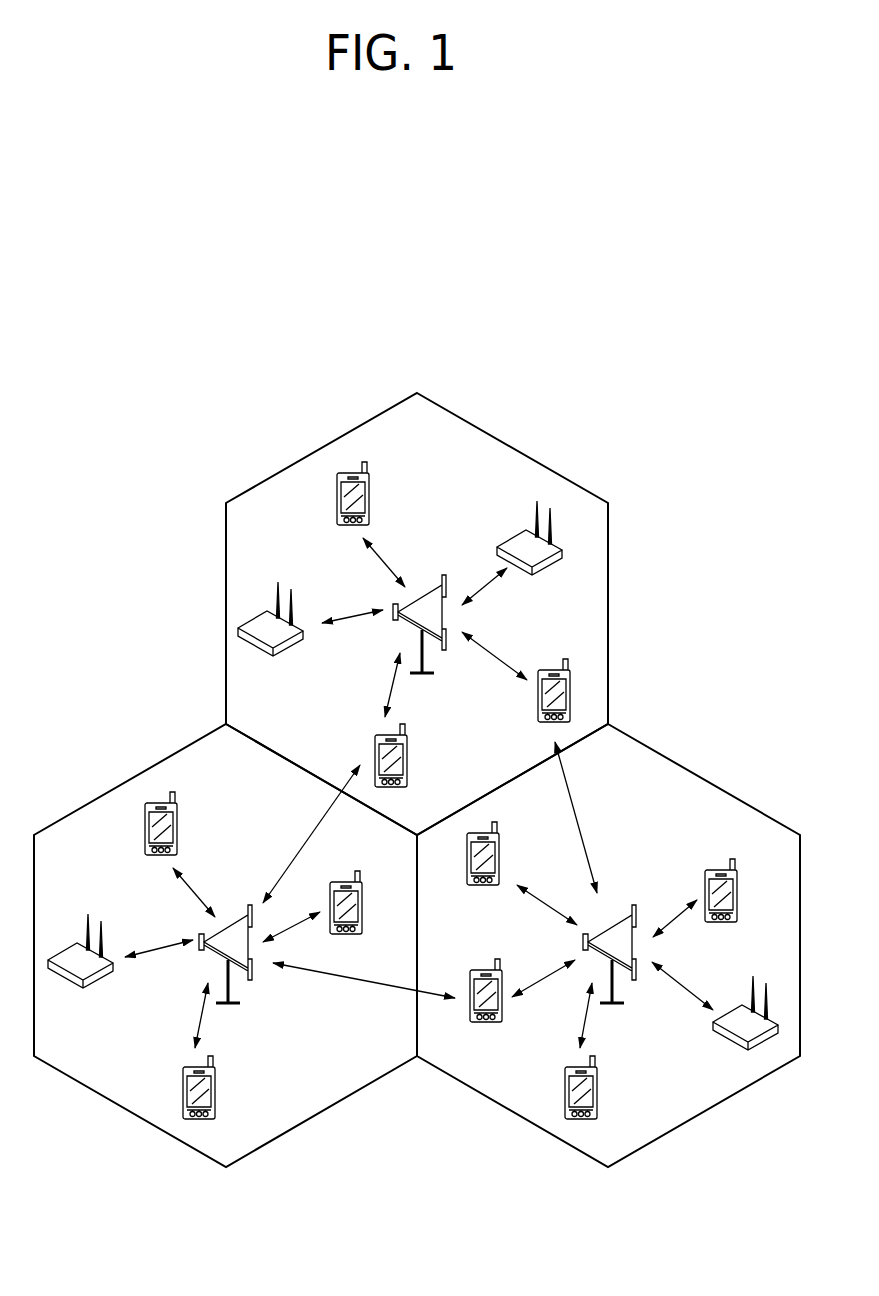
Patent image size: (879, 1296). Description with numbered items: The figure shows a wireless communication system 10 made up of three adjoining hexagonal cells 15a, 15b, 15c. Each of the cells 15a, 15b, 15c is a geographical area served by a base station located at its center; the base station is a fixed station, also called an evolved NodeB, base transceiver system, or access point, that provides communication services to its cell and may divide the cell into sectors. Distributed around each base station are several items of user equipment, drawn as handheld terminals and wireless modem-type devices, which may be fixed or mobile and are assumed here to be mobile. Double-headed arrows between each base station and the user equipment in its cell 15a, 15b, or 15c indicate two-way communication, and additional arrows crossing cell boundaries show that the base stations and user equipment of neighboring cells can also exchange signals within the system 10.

The wireless communication system 10 is at (690, 508).
The cell 15a is at (608, 603).
The cell 15b is at (731, 791).
The cell 15c is at (103, 791).